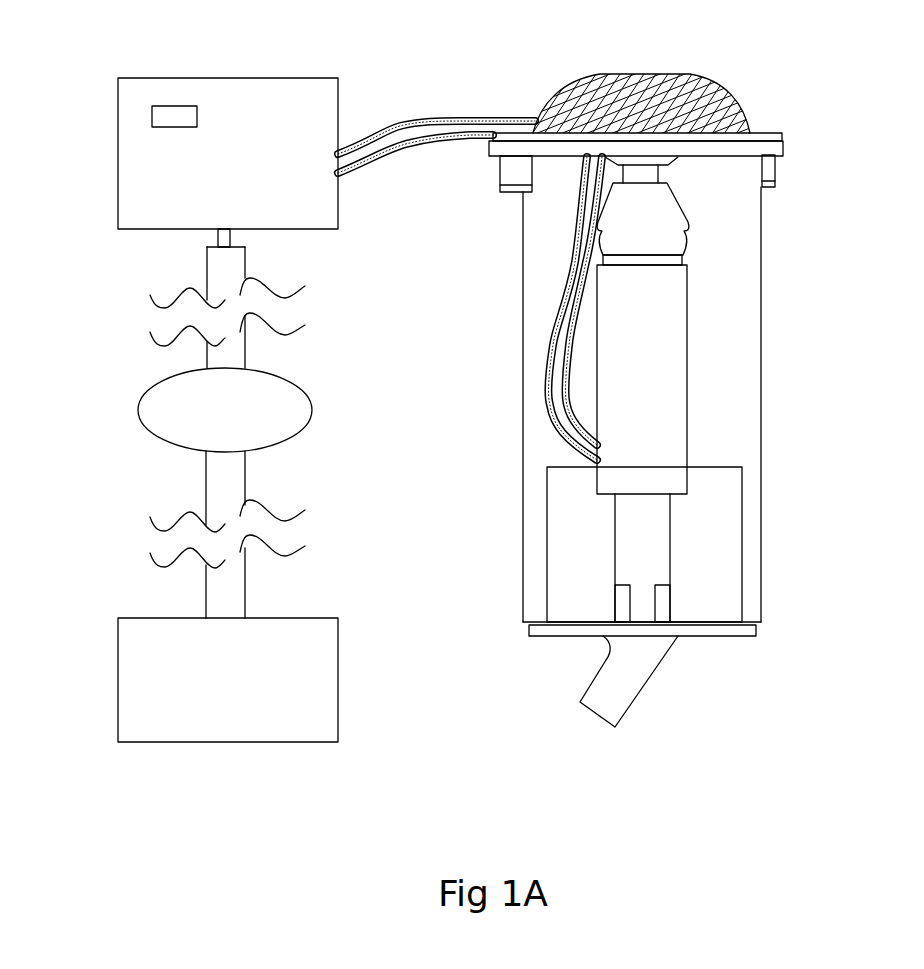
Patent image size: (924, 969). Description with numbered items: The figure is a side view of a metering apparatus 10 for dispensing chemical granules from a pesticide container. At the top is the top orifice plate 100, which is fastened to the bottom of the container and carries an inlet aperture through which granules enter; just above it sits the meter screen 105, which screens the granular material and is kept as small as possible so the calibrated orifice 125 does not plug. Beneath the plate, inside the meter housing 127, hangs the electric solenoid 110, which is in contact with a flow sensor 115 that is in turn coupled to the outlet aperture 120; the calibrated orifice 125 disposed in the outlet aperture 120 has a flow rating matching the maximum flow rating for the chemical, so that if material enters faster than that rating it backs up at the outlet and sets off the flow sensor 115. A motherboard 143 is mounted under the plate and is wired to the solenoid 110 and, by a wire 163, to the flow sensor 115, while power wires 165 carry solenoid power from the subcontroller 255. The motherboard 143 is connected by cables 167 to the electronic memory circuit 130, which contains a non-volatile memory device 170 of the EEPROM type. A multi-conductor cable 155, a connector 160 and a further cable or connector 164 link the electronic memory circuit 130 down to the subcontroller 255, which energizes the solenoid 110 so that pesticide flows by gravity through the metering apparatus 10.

The metering apparatus 10 is at (912, 208).
The top orifice plate 100 is at (790, 150).
The meter screen 105 is at (630, 66).
The electric solenoid 110 is at (665, 345).
The flow sensor 115 is at (577, 535).
The outlet aperture 120 is at (608, 708).
The calibrated orifice 125 is at (664, 605).
The meter housing 127 is at (765, 445).
The electronic memory circuit 130 is at (270, 93).
The motherboard 143 is at (523, 200).
The multi-conductor cable 155 is at (217, 263).
The connector 160 is at (137, 413).
The wire 163 is at (533, 345).
The cable or connector 164 is at (235, 592).
The power wires 165 is at (560, 262).
The connecting cables 167 is at (434, 112).
The non-volatile memory device 170 is at (174, 113).
The subcontroller 255 is at (243, 742).